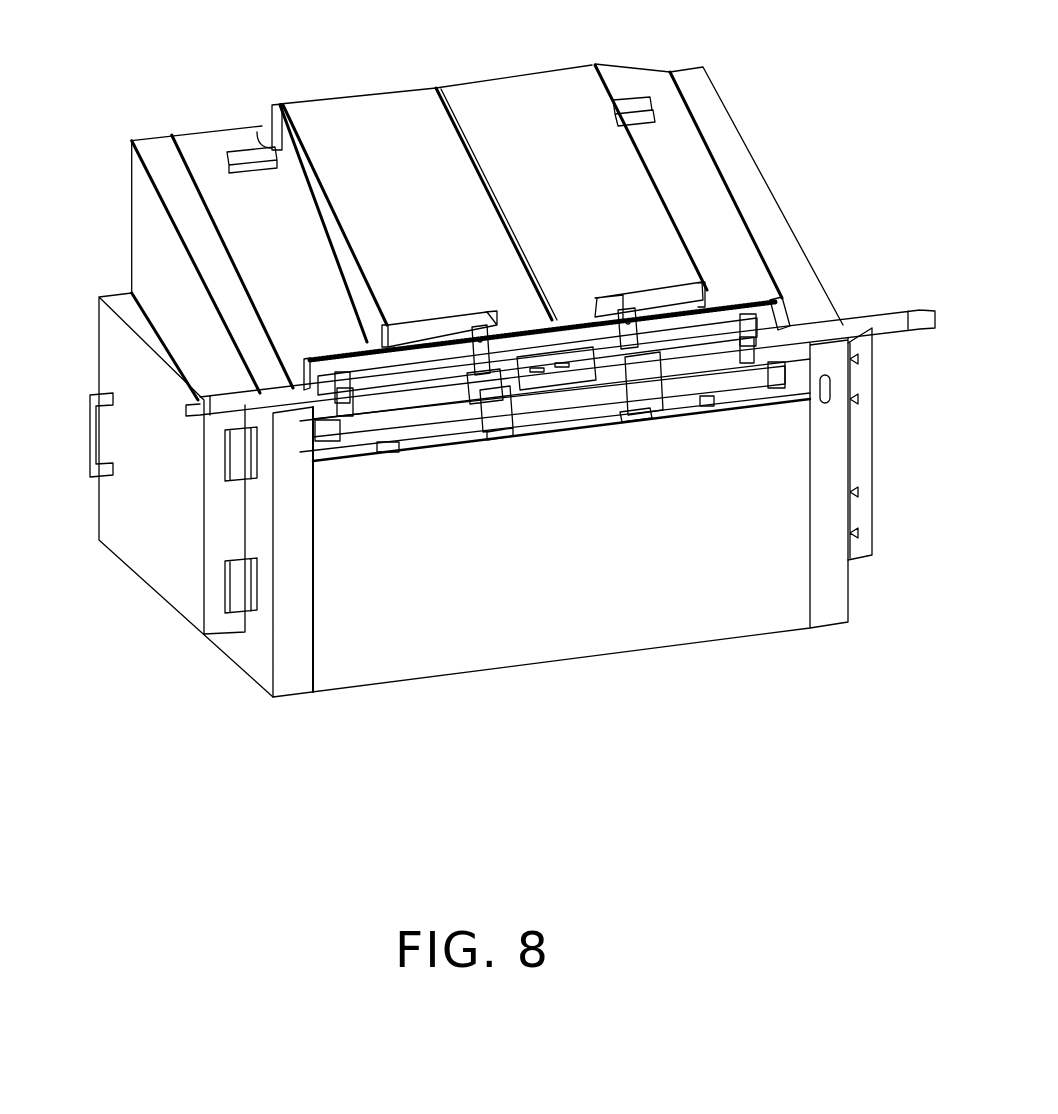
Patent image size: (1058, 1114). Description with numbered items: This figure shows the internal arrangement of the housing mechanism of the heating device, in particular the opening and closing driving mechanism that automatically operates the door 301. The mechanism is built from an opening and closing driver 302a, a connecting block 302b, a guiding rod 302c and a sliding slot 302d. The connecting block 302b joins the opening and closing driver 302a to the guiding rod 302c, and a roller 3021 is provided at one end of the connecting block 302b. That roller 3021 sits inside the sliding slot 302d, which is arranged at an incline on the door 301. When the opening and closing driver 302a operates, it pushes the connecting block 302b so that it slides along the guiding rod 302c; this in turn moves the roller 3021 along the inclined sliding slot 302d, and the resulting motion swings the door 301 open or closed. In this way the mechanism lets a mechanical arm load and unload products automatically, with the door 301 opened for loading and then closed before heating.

The door 301 is at (380, 113).
The roller 3021 is at (443, 332).
The opening and closing driver 302a is at (845, 328).
The connecting block 302b is at (512, 425).
The guiding rod 302c is at (380, 372).
The sliding slot 302d is at (230, 150).